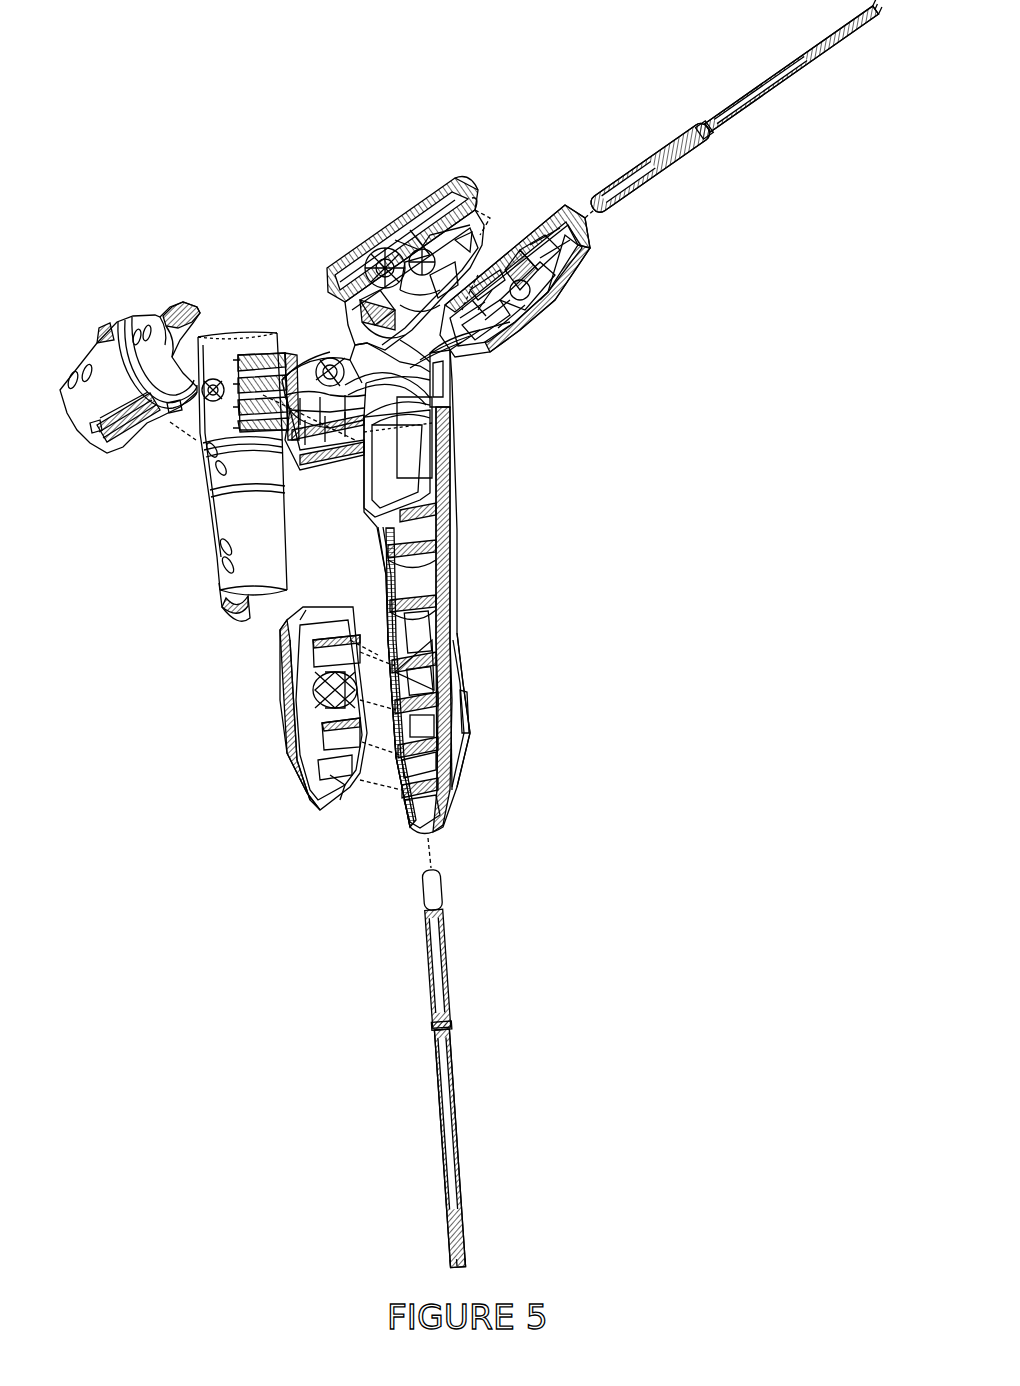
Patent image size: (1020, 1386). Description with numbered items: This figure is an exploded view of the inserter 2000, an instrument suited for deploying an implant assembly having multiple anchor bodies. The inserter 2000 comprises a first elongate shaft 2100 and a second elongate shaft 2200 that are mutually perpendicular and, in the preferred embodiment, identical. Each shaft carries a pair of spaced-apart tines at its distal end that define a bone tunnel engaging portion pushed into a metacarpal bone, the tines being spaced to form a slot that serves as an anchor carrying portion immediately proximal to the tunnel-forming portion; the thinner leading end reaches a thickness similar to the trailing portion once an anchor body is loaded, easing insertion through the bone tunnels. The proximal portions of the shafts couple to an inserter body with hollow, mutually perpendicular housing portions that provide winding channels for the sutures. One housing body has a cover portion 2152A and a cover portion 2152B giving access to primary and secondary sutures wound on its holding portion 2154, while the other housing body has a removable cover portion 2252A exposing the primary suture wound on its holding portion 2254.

The inserter 2000 is at (466, 638).
The first elongate shaft 2100 is at (443, 1057).
The cover portion 2152A is at (222, 515).
The cover portion 2152B is at (338, 252).
The holding portion 2154 is at (455, 530).
The second elongate shaft 2200 is at (738, 113).
The removable cover portion 2252A is at (159, 313).
The holding portion 2254 is at (545, 312).